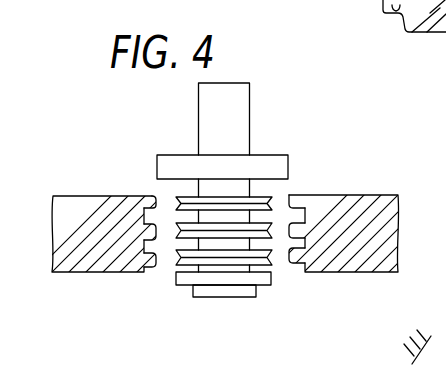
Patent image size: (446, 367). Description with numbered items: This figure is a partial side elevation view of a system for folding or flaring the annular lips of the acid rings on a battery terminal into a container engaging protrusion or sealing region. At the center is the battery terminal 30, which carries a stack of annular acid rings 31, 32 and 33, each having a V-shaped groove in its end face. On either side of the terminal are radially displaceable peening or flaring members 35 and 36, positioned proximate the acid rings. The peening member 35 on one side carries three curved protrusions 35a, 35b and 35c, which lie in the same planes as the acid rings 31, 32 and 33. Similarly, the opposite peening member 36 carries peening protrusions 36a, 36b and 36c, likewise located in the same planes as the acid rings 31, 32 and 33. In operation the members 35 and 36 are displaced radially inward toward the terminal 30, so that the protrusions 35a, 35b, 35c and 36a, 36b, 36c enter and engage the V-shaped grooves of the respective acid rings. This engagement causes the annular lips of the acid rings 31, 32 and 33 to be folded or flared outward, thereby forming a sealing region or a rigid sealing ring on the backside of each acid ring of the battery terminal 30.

The battery terminal 30 is at (242, 107).
The acid ring 31 is at (276, 195).
The acid ring 32 is at (276, 242).
The acid ring 33 is at (272, 234).
The peening member 35 is at (127, 227).
The curved protrusion 35a is at (155, 196).
The curved protrusion 35b is at (148, 228).
The curved protrusion 35c is at (155, 249).
The peening member 36 is at (358, 210).
The peening protrusion 36a is at (290, 197).
The peening protrusion 36b is at (283, 233).
The peening protrusion 36c is at (292, 262).